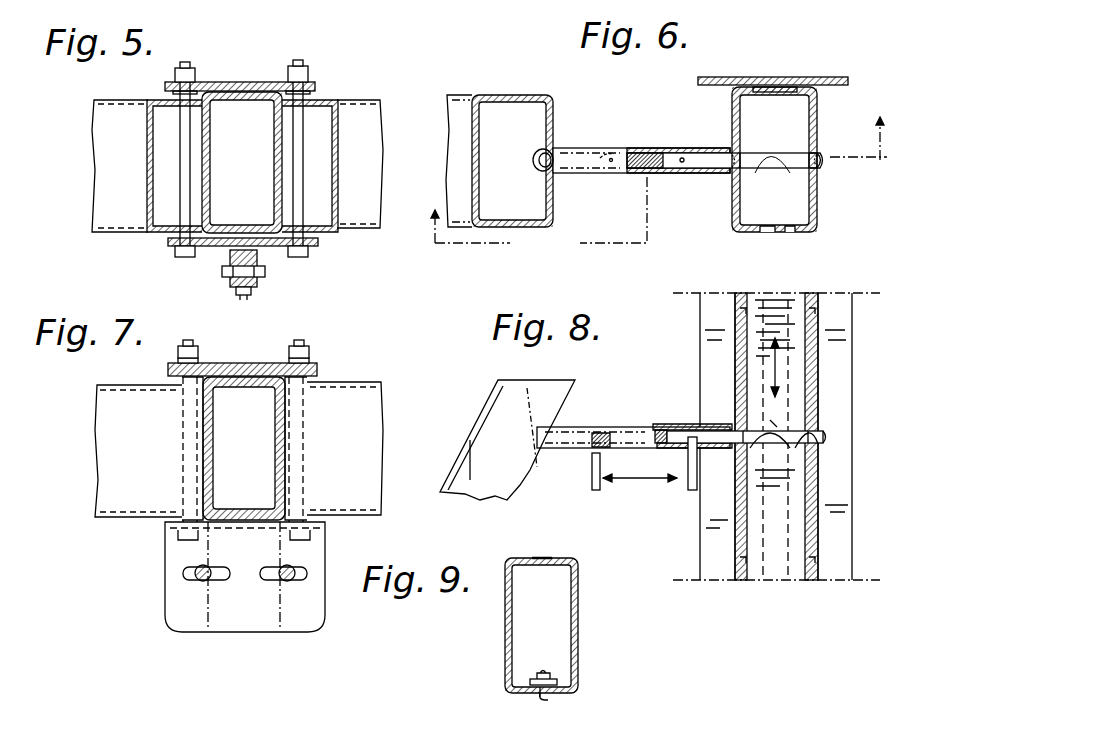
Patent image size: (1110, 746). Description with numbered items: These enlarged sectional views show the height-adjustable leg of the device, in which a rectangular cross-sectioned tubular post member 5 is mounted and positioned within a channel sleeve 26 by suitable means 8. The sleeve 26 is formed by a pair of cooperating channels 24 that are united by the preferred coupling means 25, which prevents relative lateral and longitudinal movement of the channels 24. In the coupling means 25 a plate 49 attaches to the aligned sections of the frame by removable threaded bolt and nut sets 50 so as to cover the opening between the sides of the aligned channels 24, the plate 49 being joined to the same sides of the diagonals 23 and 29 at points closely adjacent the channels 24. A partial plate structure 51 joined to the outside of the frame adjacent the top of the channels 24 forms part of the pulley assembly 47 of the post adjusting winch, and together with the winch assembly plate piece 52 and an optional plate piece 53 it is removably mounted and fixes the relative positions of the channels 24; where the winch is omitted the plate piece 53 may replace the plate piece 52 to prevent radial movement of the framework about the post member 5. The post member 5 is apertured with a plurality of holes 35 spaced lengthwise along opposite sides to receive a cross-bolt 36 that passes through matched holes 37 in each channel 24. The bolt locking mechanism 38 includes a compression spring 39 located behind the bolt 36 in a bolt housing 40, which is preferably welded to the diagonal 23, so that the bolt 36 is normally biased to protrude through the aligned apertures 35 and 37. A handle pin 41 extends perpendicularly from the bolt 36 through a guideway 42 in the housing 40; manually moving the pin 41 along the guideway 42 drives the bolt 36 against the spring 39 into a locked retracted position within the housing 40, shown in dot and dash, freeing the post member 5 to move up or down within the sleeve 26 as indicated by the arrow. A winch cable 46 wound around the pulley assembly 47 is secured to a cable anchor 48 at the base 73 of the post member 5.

In FIG. 5, the post member 5 is at (247, 100).
In FIG. 6, the post member 5 is at (773, 92).
In FIG. 7, the post member 5 is at (248, 388).
In FIG. 8, the post member 5 is at (793, 387).
In FIG. 9, the post member 5 is at (507, 648).
In FIG. 6, the means for mounting and positioning the post 8 is at (662, 197).
In FIG. 8, the means for mounting and positioning the post 8 is at (598, 423).
In FIG. 5, the diagonal 23 is at (100, 124).
In FIG. 6, the diagonal 23 is at (499, 95).
In FIG. 8, the diagonal 23 is at (534, 387).
In FIG. 5, the channel 24 is at (195, 152).
In FIG. 6, the channel 24 is at (732, 124).
In FIG. 7, the channel 24 is at (203, 437).
In FIG. 8, the channel 24 is at (735, 352).
In FIG. 5, the coupling means 25 is at (266, 82).
In FIG. 6, the coupling means 25 is at (727, 77).
In FIG. 7, the coupling means 25 is at (211, 362).
In FIG. 8, the coupling means 25 is at (853, 479).
In FIG. 5, the channel sleeve 26 is at (186, 185).
In FIG. 6, the channel sleeve 26 is at (730, 101).
In FIG. 7, the channel sleeve 26 is at (196, 457).
In FIG. 8, the channel sleeve 26 is at (821, 462).
In FIG. 7, the diagonal 29 is at (102, 412).
In FIG. 6, the holes 35 is at (792, 160).
In FIG. 8, the holes 35 is at (738, 308).
In FIG. 6, the cross-bolt 36 is at (821, 163).
In FIG. 8, the cross-bolt 36 is at (778, 427).
In FIG. 6, the matched holes 37 is at (818, 157).
In FIG. 8, the matched holes 37 is at (822, 433).
In FIG. 6, the bolt locking mechanism 38 is at (606, 153).
In FIG. 8, the bolt locking mechanism 38 is at (566, 448).
In FIG. 6, the compression spring 39 is at (644, 150).
In FIG. 8, the compression spring 39 is at (663, 424).
In FIG. 6, the bolt housing 40 is at (578, 148).
In FIG. 8, the bolt housing 40 is at (628, 424).
In FIG. 6, the handle pin 41 is at (678, 174).
In FIG. 8, the handle pin 41 is at (594, 490).
In FIG. 6, the guideway 42 is at (612, 172).
In FIG. 8, the guideway 42 is at (670, 450).
In FIG. 9, the cable 46 is at (548, 700).
In FIG. 5, the pulley assembly 47 is at (252, 294).
In FIG. 9, the cable anchor 48 is at (545, 674).
In FIG. 5, the plate 49 is at (218, 82).
In FIG. 6, the plate 49 is at (829, 77).
In FIG. 7, the plate 49 is at (318, 374).
In FIG. 8, the plate 49 is at (845, 517).
In FIG. 5, the threaded bolt and nut sets 50 is at (176, 70).
In FIG. 7, the threaded bolt and nut sets 50 is at (180, 346).
In FIG. 5, the partial plate structure 51 is at (318, 244).
In FIG. 7, the winch assembly plate piece 52 is at (176, 550).
In FIG. 7, the plate piece 53 is at (236, 362).
In FIG. 9, the base of post member 73 is at (540, 560).